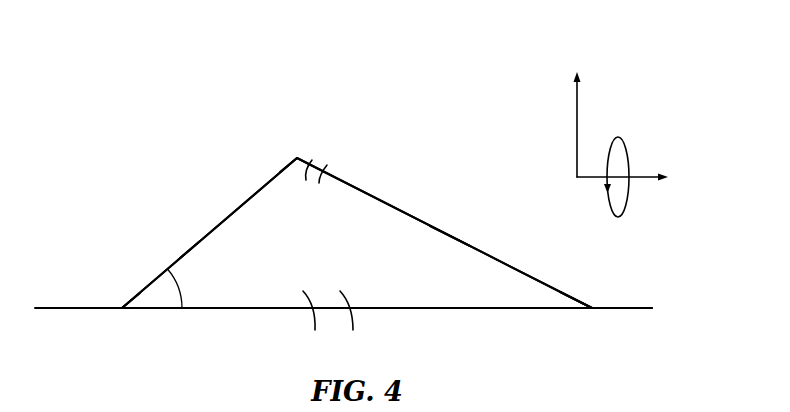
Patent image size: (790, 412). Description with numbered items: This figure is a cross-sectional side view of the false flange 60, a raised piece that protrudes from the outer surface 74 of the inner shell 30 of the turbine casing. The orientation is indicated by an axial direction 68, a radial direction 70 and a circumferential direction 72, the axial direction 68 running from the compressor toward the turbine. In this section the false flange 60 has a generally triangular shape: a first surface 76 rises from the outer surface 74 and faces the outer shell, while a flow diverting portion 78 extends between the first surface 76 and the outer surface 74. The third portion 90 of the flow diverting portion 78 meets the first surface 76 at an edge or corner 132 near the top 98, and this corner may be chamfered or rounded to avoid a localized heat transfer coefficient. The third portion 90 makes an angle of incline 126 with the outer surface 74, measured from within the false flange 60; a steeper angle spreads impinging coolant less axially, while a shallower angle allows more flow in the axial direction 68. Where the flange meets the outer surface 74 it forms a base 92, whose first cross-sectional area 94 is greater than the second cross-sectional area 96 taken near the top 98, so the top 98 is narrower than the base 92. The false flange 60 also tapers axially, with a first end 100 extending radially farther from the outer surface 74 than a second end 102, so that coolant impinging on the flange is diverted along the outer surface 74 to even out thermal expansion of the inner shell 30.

The inner shell 30 is at (373, 52).
The false flange 60 is at (450, 255).
The axial direction 68 is at (592, 178).
The radial direction 70 is at (577, 100).
The circumferential direction 72 is at (617, 138).
The outer surface 74 is at (632, 307).
The first surface 76 is at (398, 206).
The flow diverting portion 78 is at (227, 203).
The third portion 90 is at (190, 247).
The base 92 is at (354, 324).
The first cross-sectional area 94 is at (312, 324).
The second cross-sectional area 96 is at (327, 172).
The top 98 is at (313, 178).
The first end 100 is at (123, 287).
The second end 102 is at (600, 288).
The angle of incline 126 is at (181, 285).
The edge or corner 132 is at (295, 157).